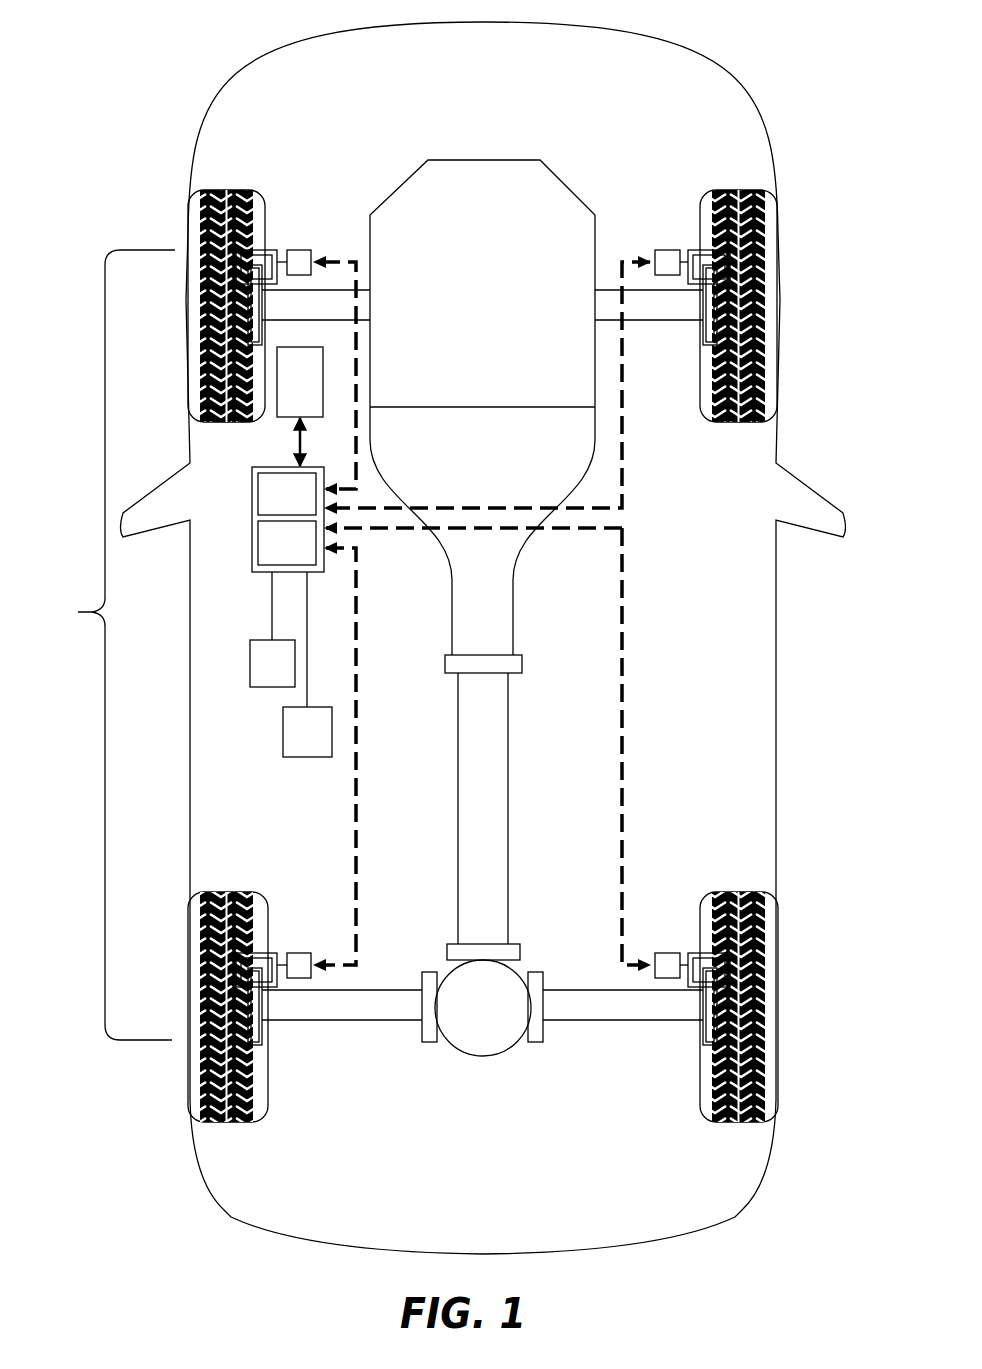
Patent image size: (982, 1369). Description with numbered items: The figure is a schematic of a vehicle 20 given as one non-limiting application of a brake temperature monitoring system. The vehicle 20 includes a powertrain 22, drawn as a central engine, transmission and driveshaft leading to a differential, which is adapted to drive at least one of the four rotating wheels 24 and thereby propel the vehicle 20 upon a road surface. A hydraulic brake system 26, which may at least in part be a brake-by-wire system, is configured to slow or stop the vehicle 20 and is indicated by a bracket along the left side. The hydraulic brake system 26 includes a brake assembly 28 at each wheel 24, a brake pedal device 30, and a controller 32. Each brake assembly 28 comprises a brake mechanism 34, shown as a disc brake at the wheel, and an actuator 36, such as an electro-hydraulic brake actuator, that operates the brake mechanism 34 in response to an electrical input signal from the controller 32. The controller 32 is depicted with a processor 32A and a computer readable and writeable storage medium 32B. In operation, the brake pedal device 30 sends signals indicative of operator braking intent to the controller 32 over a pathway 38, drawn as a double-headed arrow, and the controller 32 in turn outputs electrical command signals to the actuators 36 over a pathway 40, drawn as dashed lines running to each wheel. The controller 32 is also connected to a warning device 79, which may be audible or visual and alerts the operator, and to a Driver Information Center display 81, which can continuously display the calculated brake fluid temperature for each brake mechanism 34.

The vehicle 20 is at (742, 70).
The powertrain 22 is at (570, 183).
The rotating wheels 24 is at (786, 272).
The hydraulic brake system 26 is at (78, 612).
The brake assembly 28 is at (483, 596).
The brake pedal device 30 is at (300, 382).
The controller 32 is at (276, 587).
The processor 32A is at (287, 494).
The storage medium 32B is at (287, 543).
The brake mechanism 34 is at (265, 250).
The actuator 36 is at (308, 250).
The pathway 38 is at (292, 440).
The pathway 40 is at (358, 388).
The warning device 79 is at (272, 663).
The Driver Information Center display 81 is at (307, 732).